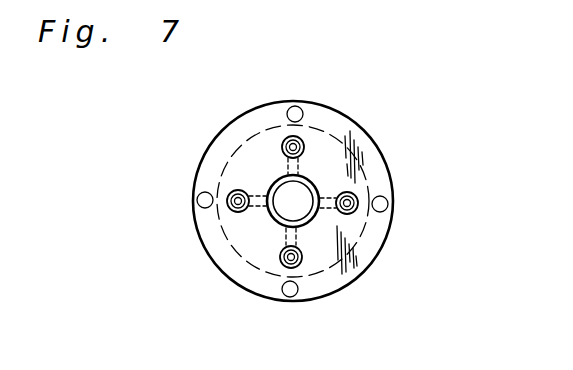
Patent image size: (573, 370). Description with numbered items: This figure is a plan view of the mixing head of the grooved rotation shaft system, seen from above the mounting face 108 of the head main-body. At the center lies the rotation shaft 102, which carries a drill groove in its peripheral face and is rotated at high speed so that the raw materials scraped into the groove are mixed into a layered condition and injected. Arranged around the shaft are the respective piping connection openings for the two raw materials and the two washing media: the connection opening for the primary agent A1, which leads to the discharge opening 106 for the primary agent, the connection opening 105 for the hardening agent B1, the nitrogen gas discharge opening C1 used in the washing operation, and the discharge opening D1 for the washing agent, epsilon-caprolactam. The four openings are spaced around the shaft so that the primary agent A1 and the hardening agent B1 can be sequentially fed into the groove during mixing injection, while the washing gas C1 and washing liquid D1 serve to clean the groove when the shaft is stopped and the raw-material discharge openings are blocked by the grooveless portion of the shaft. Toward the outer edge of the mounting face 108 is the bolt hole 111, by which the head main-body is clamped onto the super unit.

The rotation shaft 102 is at (300, 197).
The connection opening for the hardening agent 105 is at (353, 194).
The discharge opening for primary agent 106 is at (252, 224).
The mounting face 108 is at (360, 260).
The bolt hole 111 is at (392, 202).
The primary agent A1 is at (228, 206).
The hardening agent B1 is at (356, 212).
The N2 gas discharge opening for washing C1 is at (297, 263).
The discharge opening for washing agent D1 is at (302, 142).